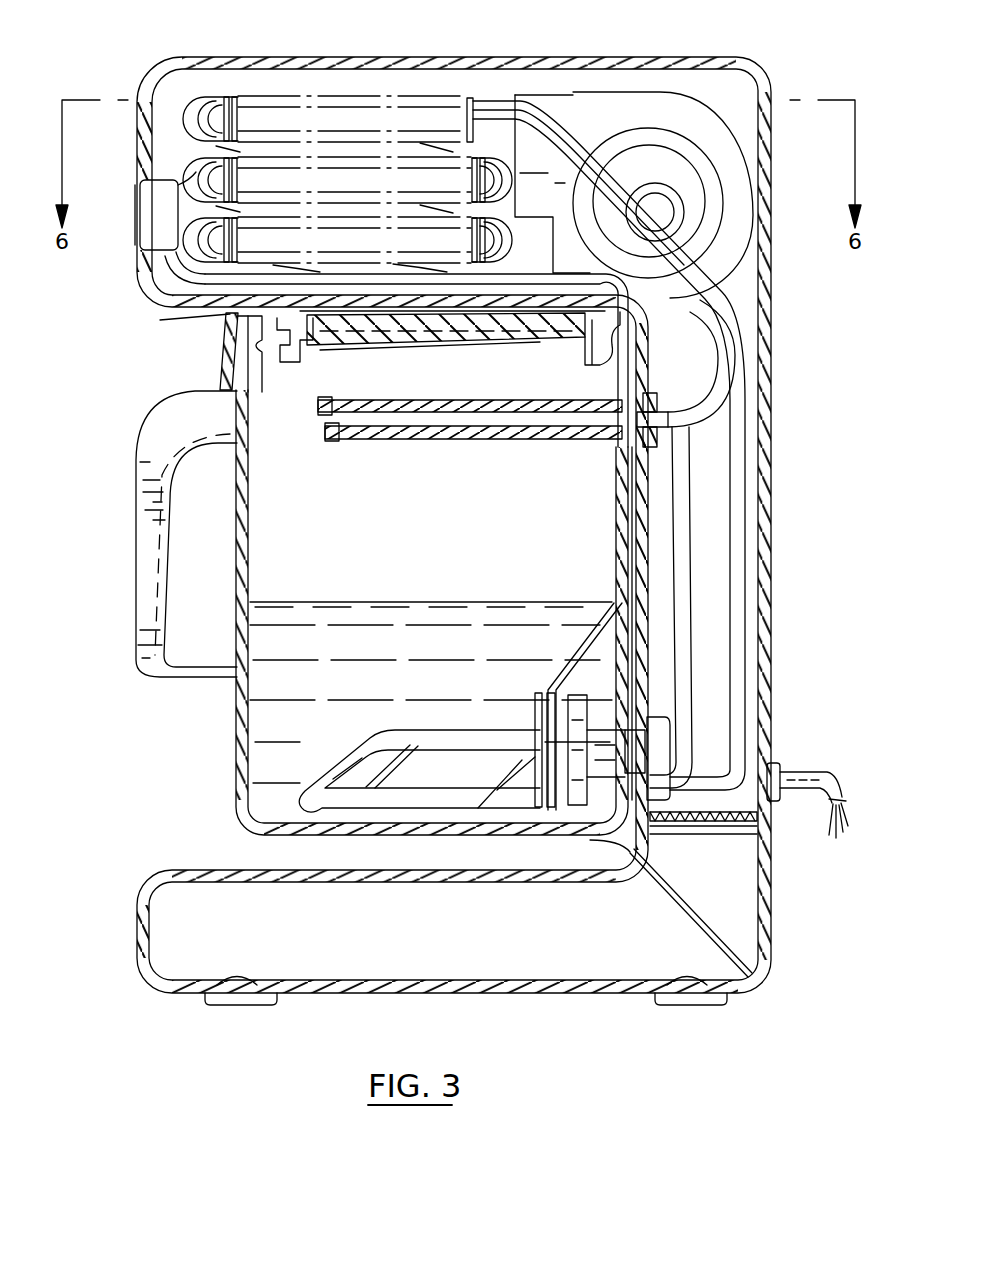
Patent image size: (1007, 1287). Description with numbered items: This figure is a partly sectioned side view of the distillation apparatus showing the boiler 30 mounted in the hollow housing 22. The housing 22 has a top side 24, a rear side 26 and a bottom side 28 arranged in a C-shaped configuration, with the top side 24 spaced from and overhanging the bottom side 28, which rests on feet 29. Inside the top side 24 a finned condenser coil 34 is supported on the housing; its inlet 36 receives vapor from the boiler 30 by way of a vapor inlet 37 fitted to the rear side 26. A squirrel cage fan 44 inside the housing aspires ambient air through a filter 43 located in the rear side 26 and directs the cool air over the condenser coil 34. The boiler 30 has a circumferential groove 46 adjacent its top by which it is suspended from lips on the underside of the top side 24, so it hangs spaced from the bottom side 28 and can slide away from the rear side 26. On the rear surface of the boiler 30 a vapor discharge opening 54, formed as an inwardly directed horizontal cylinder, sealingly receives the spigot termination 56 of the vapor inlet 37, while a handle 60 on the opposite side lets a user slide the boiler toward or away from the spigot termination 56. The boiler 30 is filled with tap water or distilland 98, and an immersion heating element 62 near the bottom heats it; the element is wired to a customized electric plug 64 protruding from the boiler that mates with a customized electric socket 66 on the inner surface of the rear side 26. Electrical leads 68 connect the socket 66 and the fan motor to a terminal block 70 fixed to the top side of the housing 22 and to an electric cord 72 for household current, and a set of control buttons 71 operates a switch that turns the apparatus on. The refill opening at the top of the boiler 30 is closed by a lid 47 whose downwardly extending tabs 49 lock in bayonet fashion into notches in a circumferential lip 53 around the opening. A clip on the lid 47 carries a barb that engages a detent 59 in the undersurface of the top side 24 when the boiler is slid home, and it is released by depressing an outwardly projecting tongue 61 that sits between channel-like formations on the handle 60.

The housing 22 is at (300, 52).
The top side 24 is at (420, 57).
The rear side 26 is at (771, 500).
The bottom side 28 is at (137, 930).
The feet 29 is at (215, 1005).
The boiler 30 is at (236, 766).
The finned condenser coil 34 is at (245, 97).
The inlet 36 is at (575, 122).
The vapor inlet 37 is at (640, 392).
The filter 43 is at (730, 812).
The squirrel cage fan 44 is at (688, 105).
The circumferential groove 46 is at (263, 365).
The lid 47 is at (405, 350).
The tabs 49 is at (302, 360).
The circumferential lip 53 is at (585, 365).
The vapor discharge opening 54 is at (545, 441).
The spigot termination 56 is at (318, 436).
The detent 59 is at (170, 318).
The handle 60 is at (136, 583).
The tongue 61 is at (226, 345).
The immersion heating element 62 is at (387, 700).
The electric plug 64 is at (598, 730).
The electric socket 66 is at (615, 842).
The electrical leads 68 is at (692, 540).
The terminal block 70 is at (190, 178).
The control buttons 71 is at (137, 212).
The electric cord 72 is at (795, 758).
The distilland 98 is at (440, 602).